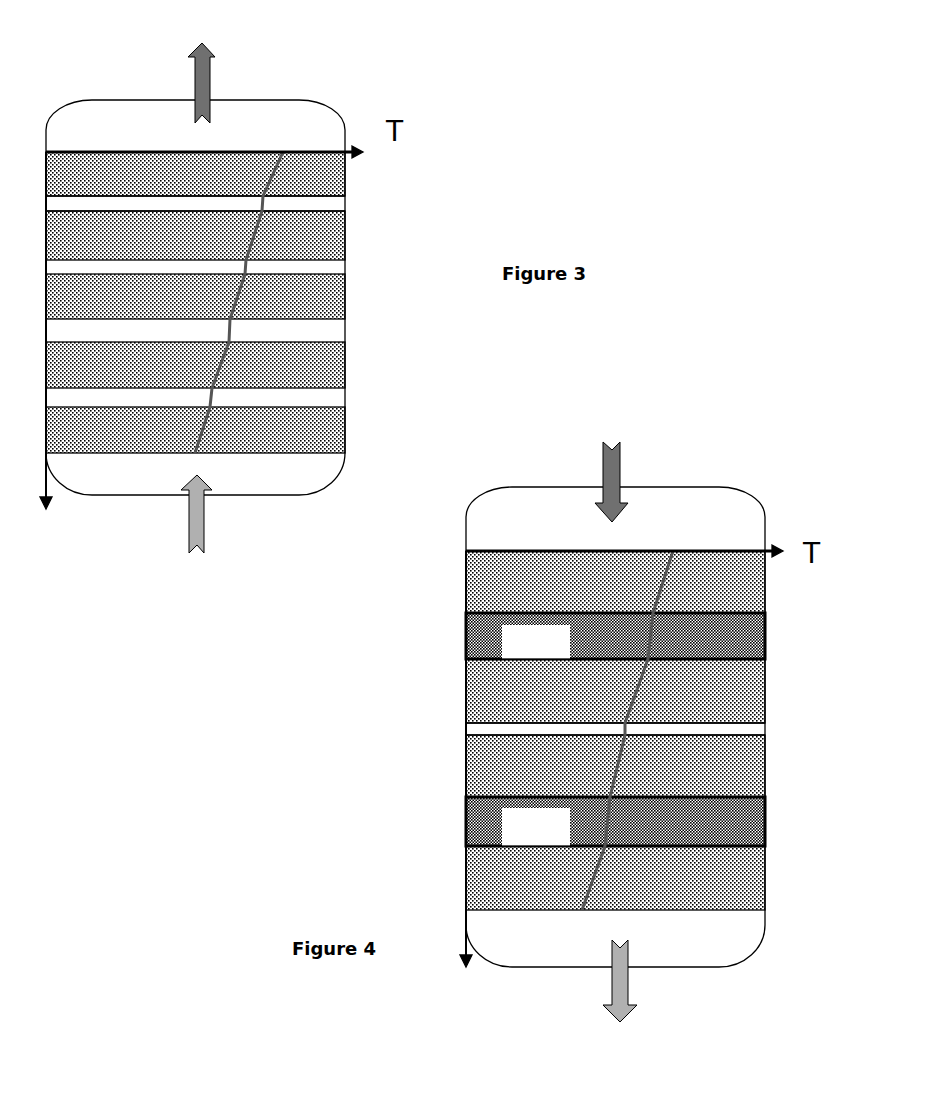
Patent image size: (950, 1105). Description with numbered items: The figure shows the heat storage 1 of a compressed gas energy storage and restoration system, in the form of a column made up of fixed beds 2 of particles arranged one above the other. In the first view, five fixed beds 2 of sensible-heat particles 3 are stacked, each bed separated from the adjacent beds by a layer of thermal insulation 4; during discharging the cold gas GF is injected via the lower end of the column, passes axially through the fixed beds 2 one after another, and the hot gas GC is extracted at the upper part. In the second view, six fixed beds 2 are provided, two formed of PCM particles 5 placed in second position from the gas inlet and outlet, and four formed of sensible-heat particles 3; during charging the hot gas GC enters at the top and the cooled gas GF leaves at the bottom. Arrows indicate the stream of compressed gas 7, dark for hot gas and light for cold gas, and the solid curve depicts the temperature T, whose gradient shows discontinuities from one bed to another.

In FIG. 3, the heat storage 1 is at (346, 128).
In FIG. 4, the heat storage 1 is at (767, 525).
In FIG. 3, the fixed beds 2 is at (243, 302).
In FIG. 4, the fixed beds 2 is at (607, 730).
In FIG. 3, the particles 3 is at (314, 302).
In FIG. 4, the particles 3 is at (742, 890).
In FIG. 3, the layer of thermal insulation 4 is at (332, 202).
In FIG. 4, the layer of thermal insulation 4 is at (760, 728).
In FIG. 4, the PCM particles 5 is at (742, 632).
In FIG. 3, the stream of compressed gas 7 is at (209, 78).
In FIG. 4, the stream of compressed gas 7 is at (625, 470).